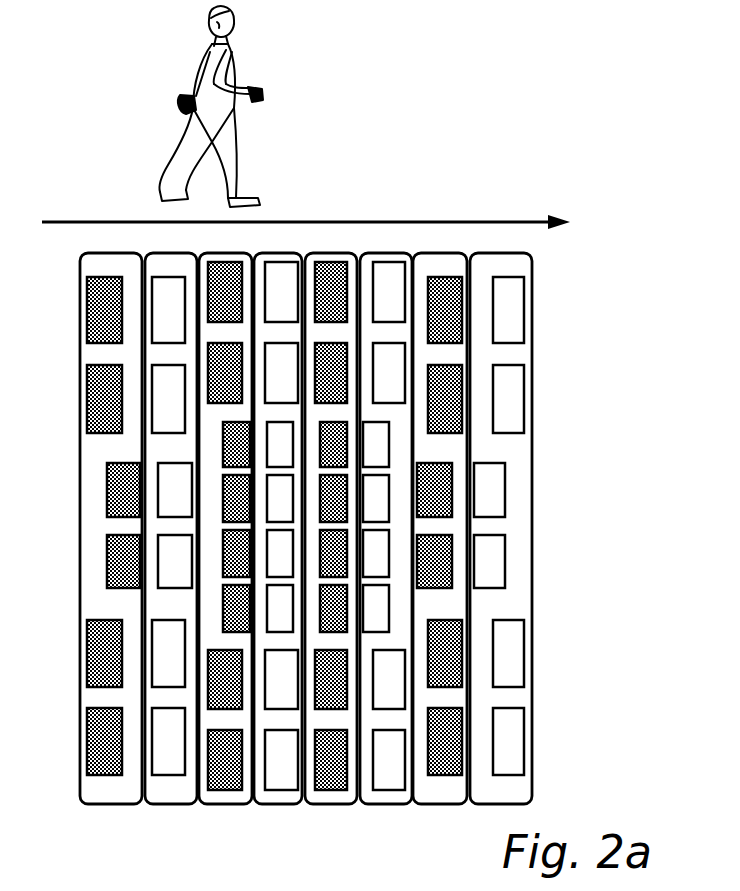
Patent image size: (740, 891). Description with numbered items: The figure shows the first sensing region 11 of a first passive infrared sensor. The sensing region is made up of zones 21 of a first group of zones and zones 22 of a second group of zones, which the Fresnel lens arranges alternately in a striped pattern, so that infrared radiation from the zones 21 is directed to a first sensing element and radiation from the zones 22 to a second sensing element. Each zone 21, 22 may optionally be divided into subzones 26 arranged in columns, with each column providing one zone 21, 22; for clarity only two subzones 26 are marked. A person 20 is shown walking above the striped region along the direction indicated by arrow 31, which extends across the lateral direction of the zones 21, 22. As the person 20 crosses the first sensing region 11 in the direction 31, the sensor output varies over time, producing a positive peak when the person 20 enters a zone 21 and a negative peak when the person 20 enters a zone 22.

The first sensing region 11 is at (565, 324).
The person 20 is at (235, 58).
The zone of the first group of zones 21 is at (105, 253).
The zone of the second group of zones 22 is at (178, 253).
The subzone 26 is at (450, 393).
The arrow 31 is at (548, 222).